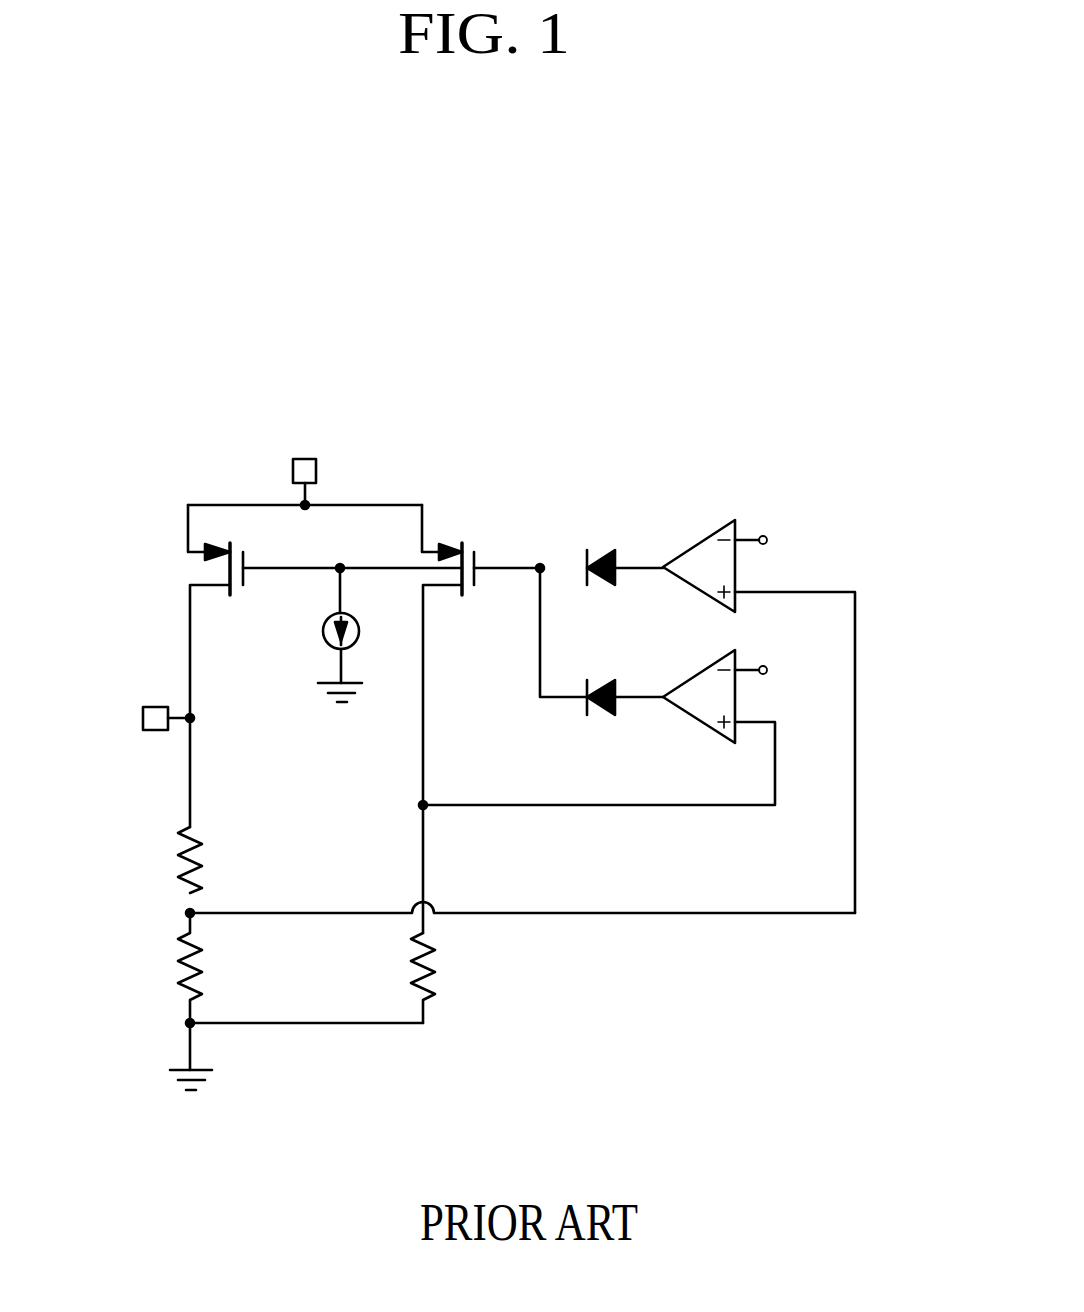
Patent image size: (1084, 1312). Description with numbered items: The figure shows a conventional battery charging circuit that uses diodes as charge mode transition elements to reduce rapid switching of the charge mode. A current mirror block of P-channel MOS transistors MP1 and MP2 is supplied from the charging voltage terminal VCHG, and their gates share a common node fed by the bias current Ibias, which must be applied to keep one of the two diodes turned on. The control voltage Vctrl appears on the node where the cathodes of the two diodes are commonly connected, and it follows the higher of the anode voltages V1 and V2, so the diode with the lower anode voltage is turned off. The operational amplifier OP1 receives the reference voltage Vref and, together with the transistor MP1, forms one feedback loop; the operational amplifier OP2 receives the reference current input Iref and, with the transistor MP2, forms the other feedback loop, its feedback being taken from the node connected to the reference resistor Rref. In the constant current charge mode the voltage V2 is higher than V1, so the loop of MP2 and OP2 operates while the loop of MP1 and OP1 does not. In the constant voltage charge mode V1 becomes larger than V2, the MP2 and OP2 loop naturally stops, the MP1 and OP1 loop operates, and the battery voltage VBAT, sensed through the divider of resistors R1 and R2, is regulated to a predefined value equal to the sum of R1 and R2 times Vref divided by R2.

The charging voltage terminal VCHG is at (303, 463).
The P-channel MOS transistor MP1 is at (325, 666).
The P-channel MOS transistor MP2 is at (481, 719).
The bias current Ibias is at (299, 635).
The control voltage Vctrl is at (540, 607).
The anode voltage V1 is at (638, 560).
The anode voltage V2 is at (638, 703).
The operational amplifier OP1 is at (759, 704).
The operational amplifier OP2 is at (599, 715).
The reference voltage Vref is at (786, 542).
The reference current Iref is at (786, 672).
The battery voltage VBAT is at (131, 718).
The resistor R1 is at (210, 860).
The resistor R2 is at (210, 968).
The reference resistor Rref is at (460, 978).